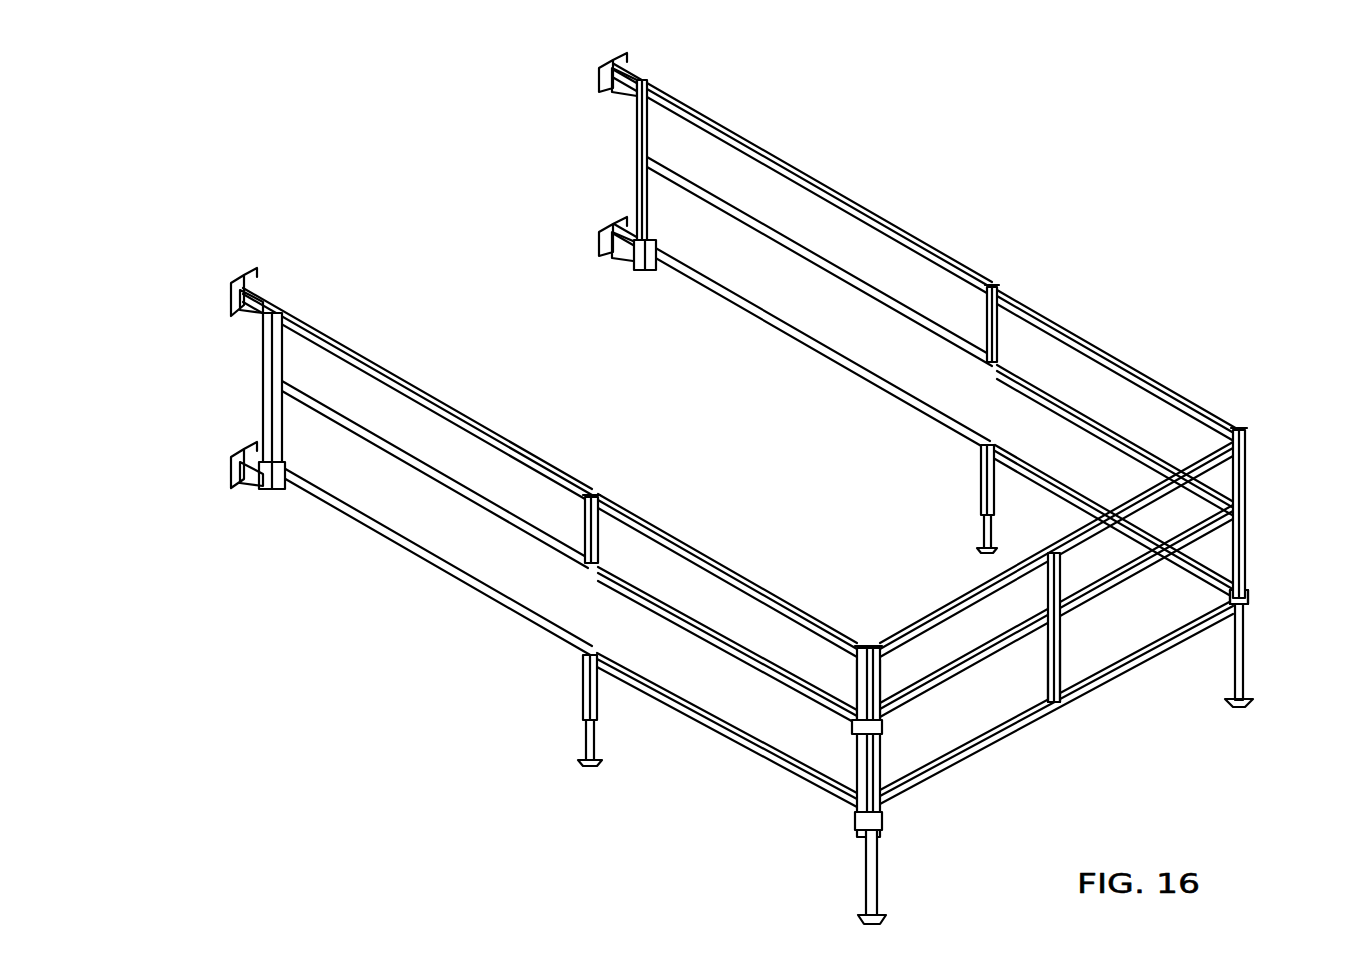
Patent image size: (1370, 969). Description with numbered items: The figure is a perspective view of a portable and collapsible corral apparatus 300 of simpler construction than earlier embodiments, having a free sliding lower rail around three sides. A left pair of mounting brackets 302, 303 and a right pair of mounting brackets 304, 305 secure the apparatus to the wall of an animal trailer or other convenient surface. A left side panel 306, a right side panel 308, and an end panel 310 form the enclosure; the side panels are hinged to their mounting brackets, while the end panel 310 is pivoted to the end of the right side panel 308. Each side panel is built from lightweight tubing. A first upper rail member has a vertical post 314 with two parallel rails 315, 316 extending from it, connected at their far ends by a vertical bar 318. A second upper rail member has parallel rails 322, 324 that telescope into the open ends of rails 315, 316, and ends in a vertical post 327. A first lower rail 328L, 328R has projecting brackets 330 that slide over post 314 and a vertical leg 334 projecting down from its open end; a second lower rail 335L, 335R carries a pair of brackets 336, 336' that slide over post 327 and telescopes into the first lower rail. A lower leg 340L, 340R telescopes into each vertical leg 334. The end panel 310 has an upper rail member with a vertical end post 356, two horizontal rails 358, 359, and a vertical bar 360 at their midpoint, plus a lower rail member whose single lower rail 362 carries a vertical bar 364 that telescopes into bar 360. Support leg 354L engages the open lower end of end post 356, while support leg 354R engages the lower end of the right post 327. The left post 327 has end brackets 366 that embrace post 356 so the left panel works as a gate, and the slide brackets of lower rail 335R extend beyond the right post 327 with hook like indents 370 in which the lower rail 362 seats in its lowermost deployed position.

The corral apparatus 300 is at (752, 488).
The left mounting bracket 302 is at (243, 273).
The left mounting bracket 303 is at (240, 463).
The right mounting bracket 304 is at (600, 80).
The right mounting bracket 305 is at (627, 240).
The left side panel 306 is at (374, 495).
The right side panel 308 is at (772, 303).
The end panel 310 is at (1107, 623).
The vertical post 314 is at (637, 135).
The upper rail 315 is at (790, 167).
The middle rail 316 is at (785, 242).
The vertical bar 318 is at (975, 303).
The upper rail 322 is at (1108, 346).
The lower parallel rail 324 is at (1057, 398).
The vertical post 327 is at (1250, 472).
The first lower rail 328L is at (402, 549).
The first lower rail 328R is at (782, 333).
The projecting brackets 330 is at (645, 270).
The vertical leg 334 is at (580, 690).
The second lower rail 335L is at (718, 742).
The second lower rail 335R is at (1022, 462).
The bracket 336 is at (823, 827).
The bracket 336' is at (1191, 597).
The lower leg 340L is at (580, 748).
The lower leg 340R is at (978, 520).
The left hand support leg 354L is at (880, 850).
The right hand support leg 354R is at (1248, 676).
The vertical end post 356 is at (880, 688).
The horizontal rail 358 is at (953, 602).
The horizontal rail 359 is at (1010, 646).
The vertical bar 360 is at (1062, 578).
The lower rail 362 is at (1128, 678).
The vertical bar 364 is at (1063, 672).
The end brackets 366 is at (852, 727).
The hook like indents 370 is at (1252, 598).